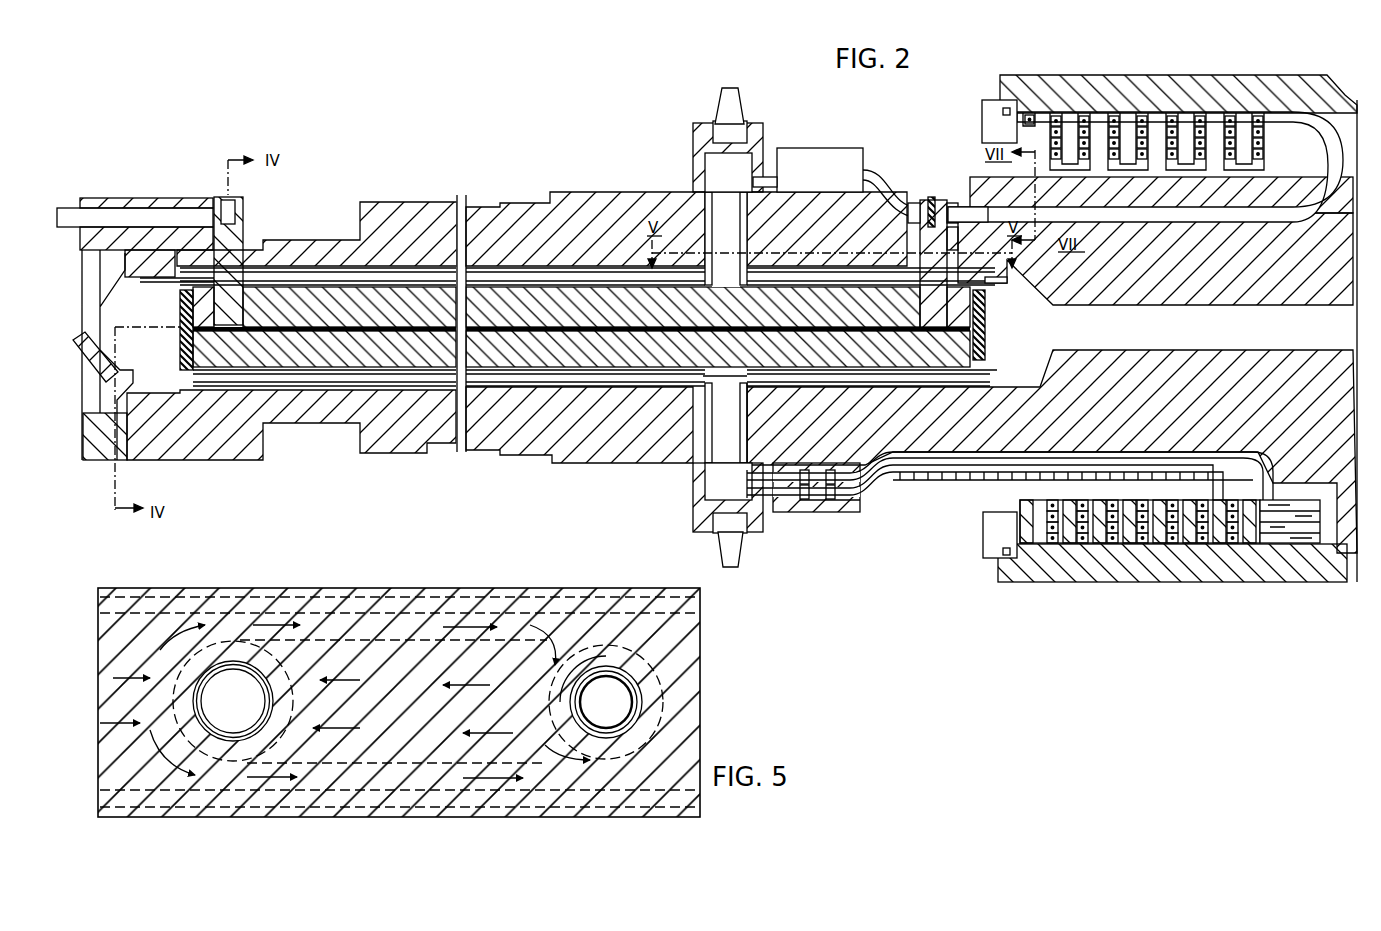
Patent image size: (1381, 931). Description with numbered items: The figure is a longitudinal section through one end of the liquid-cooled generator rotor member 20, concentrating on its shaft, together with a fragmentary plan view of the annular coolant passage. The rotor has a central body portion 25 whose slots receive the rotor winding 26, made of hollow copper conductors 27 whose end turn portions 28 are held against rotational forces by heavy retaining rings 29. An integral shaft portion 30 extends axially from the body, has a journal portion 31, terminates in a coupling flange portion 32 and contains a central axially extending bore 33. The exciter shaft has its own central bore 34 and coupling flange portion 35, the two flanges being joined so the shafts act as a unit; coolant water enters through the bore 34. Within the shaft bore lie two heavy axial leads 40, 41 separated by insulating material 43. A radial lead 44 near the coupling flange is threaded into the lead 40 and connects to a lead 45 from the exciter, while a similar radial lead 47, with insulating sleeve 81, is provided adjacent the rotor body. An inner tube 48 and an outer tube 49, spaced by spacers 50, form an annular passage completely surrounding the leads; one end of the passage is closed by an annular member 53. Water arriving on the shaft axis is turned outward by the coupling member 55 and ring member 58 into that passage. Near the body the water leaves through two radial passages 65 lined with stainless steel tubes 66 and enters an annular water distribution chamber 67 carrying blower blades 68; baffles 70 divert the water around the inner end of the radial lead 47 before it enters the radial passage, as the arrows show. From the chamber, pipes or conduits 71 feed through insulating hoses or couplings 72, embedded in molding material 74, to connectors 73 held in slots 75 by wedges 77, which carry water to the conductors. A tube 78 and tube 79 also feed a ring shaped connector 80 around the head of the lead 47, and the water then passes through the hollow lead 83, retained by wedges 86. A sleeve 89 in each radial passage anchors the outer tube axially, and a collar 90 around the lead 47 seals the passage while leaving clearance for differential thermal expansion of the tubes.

In FIG. 2, the rotor member 20 is at (1135, 610).
In FIG. 2, the central body portion 25 is at (1353, 556).
In FIG. 2, the rotor winding 26 is at (1309, 151).
In FIG. 2, the copper conductors 27 is at (1305, 543).
In FIG. 2, the end turn portions 28 is at (1035, 500).
In FIG. 2, the retaining rings 29 is at (1090, 75).
In FIG. 2, the shaft portion 30 is at (634, 192).
In FIG. 2, the journal portion 31 is at (390, 204).
In FIG. 2, the coupling flange portion 32 is at (212, 452).
In FIG. 2, the central axially extending bore 33 is at (1080, 305).
In FIG. 2, the central bore 34 is at (88, 383).
In FIG. 2, the coupling flange portion 35 is at (100, 460).
In FIG. 2, the axial lead 40 is at (545, 290).
In FIG. 2, the axial lead 41 is at (498, 350).
In FIG. 2, the insulating material 43 is at (988, 322).
In FIG. 2, the radial lead 44 is at (220, 197).
In FIG. 2, the lead 45 is at (104, 208).
In FIG. 2, the radial lead 47 is at (930, 197).
In FIG. 5, the radial lead 47 is at (594, 712).
In FIG. 2, the inner tube 48 is at (997, 371).
In FIG. 5, the inner tube 48 is at (690, 622).
In FIG. 2, the outer tube 49 is at (990, 375).
In FIG. 5, the outer tube 49 is at (705, 601).
In FIG. 2, the spacers 50 is at (345, 382).
In FIG. 2, the annular member 53 is at (1000, 283).
In FIG. 2, the coupling member 55 is at (122, 290).
In FIG. 2, the ring member 58 is at (138, 283).
In FIG. 2, the radial passages 65 is at (720, 233).
In FIG. 5, the radial passages 65 is at (221, 711).
In FIG. 2, the stainless steel tubes 66 is at (706, 378).
In FIG. 2, the annular water distribution chamber 67 is at (705, 165).
In FIG. 2, the blower blades 68 is at (734, 102).
In FIG. 2, the baffles 70 is at (703, 284).
In FIG. 5, the baffles 70 is at (340, 636).
In FIG. 2, the pipes or conduits 71 is at (750, 492).
In FIG. 2, the insulating hoses or couplings 72 is at (822, 510).
In FIG. 2, the connectors 73 is at (885, 489).
In FIG. 2, the molding material 74 is at (862, 505).
In FIG. 2, the slots 75 is at (902, 452).
In FIG. 2, the wedges 77 is at (972, 481).
In FIG. 2, the tube 78 is at (768, 177).
In FIG. 2, the tube 79 is at (870, 180).
In FIG. 2, the ring shaped connector 80 is at (918, 210).
In FIG. 2, the insulating sleeve 81 is at (918, 245).
In FIG. 5, the insulating sleeve 81 is at (640, 675).
In FIG. 2, the lead 83 is at (960, 208).
In FIG. 2, the wedges 86 is at (1185, 222).
In FIG. 2, the sleeve 89 is at (750, 424).
In FIG. 2, the collar 90 is at (958, 247).